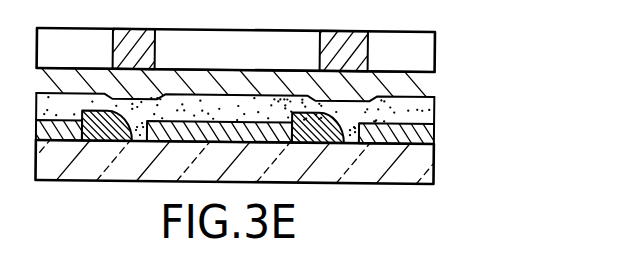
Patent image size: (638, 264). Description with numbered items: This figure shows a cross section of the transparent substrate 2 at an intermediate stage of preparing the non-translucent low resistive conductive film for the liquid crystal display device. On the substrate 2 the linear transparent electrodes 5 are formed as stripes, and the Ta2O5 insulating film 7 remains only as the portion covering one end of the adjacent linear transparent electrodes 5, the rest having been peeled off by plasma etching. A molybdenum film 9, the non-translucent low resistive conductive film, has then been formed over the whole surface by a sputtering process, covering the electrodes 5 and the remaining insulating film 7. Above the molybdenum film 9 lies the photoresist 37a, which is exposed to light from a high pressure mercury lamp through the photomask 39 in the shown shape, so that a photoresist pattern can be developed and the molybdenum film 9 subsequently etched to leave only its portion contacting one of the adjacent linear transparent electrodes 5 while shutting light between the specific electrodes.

The photomask 39 is at (423, 33).
The photoresist 37a is at (427, 82).
The molybdenum film 9 is at (428, 113).
The linear transparent electrodes 5 is at (428, 139).
The insulating film 7 is at (336, 143).
The transparent substrate 2 is at (428, 160).